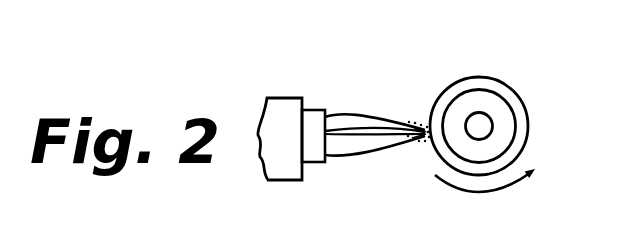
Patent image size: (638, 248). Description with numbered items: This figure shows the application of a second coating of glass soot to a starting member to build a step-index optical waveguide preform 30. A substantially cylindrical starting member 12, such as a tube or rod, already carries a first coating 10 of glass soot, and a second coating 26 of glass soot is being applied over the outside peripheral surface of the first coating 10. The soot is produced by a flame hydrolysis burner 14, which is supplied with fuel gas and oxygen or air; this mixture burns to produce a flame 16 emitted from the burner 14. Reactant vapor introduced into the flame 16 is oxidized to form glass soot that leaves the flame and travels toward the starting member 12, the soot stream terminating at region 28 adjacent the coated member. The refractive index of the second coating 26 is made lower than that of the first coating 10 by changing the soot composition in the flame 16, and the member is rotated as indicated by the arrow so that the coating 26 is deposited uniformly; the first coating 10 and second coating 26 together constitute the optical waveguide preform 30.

The first coating of glass soot 10 is at (503, 135).
The starting member 12 is at (482, 125).
The flame hydrolysis burner 14 is at (281, 108).
The flame 16 is at (352, 117).
The second coating of glass soot 26 is at (521, 115).
The fiber end bundle 28 is at (413, 126).
The optical waveguide preform 30 is at (467, 70).